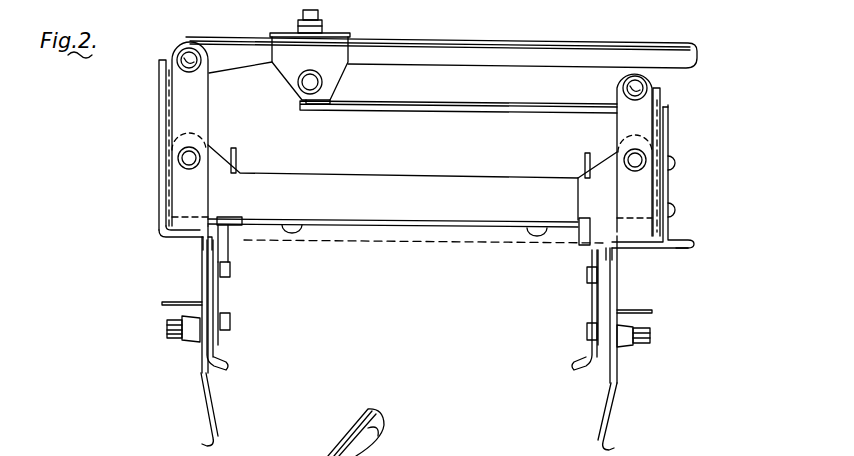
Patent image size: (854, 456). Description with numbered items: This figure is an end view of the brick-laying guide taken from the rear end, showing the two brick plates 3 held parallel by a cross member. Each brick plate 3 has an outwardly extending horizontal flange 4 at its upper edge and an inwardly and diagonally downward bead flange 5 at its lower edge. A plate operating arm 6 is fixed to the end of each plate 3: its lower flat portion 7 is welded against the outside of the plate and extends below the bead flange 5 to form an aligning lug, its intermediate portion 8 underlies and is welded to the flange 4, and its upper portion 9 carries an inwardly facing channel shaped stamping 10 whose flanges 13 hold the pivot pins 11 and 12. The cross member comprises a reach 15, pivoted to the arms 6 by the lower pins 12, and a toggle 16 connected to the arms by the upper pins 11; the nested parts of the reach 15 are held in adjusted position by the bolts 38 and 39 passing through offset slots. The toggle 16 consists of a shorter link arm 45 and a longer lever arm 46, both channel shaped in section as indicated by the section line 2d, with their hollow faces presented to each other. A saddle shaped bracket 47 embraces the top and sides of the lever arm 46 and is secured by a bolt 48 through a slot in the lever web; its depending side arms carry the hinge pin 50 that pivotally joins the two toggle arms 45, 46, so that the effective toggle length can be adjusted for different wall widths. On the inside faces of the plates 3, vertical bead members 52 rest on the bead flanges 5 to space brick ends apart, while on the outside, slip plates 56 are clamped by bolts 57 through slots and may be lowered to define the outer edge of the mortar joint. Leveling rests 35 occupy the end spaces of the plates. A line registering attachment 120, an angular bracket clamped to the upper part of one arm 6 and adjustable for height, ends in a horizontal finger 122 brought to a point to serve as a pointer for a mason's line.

The section line 2d is at (431, 16).
The brick plate 3 is at (222, 306).
The horizontal flange 4 is at (176, 238).
The bead flange 5 is at (210, 357).
The plate operating arm 6 is at (156, 212).
The lower flat portion 7 is at (200, 276).
The intermediate portion 8 is at (188, 238).
The upper portion 9 is at (158, 90).
The channel shaped stamping 10 is at (173, 114).
The pivot pin 11 is at (187, 56).
The pivot pin 12 is at (185, 160).
The flange 13 is at (195, 103).
The reach 15 is at (433, 226).
The toggle 16 is at (603, 44).
The leveling rest 35 is at (240, 232).
The bolt 38 is at (293, 230).
The bolt 39 is at (538, 237).
The shorter arm 45 is at (422, 108).
The lever arm 46 is at (433, 47).
The saddle shaped bracket 47 is at (290, 42).
The bolt 48 is at (322, 22).
The hinge pin 50 is at (312, 88).
The bead member 52 is at (230, 288).
The slip plate 56 is at (203, 408).
The bolt 57 is at (169, 335).
The line registering attachment 120 is at (668, 190).
The horizontal finger 122 is at (672, 250).